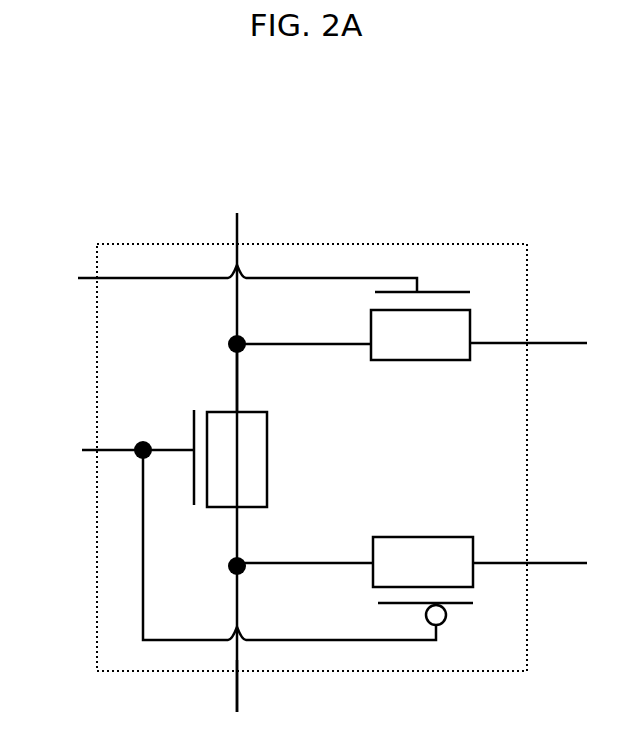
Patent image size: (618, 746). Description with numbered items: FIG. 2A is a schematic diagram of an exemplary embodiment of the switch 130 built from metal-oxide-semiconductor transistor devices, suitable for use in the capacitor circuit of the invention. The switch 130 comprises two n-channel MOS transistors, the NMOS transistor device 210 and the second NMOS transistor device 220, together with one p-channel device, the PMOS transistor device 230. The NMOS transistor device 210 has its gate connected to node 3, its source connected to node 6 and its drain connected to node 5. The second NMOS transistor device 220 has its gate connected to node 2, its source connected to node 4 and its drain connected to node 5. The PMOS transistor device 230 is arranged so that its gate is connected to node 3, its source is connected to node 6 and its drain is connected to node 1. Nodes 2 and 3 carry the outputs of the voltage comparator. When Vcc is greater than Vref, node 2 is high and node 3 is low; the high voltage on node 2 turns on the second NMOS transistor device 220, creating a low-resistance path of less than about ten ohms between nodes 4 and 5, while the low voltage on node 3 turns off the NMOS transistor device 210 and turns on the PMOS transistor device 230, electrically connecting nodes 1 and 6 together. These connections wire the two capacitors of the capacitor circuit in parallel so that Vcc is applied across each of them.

The node 1 is at (541, 563).
The node 2 is at (234, 278).
The node 3 is at (244, 537).
The node 4 is at (539, 343).
The node 5 is at (237, 446).
The node 6 is at (237, 702).
The switch 130 is at (527, 275).
The NMOS transistor device 210 is at (205, 443).
The second NMOS transistor device 220 is at (366, 312).
The PMOS transistor device 230 is at (368, 590).